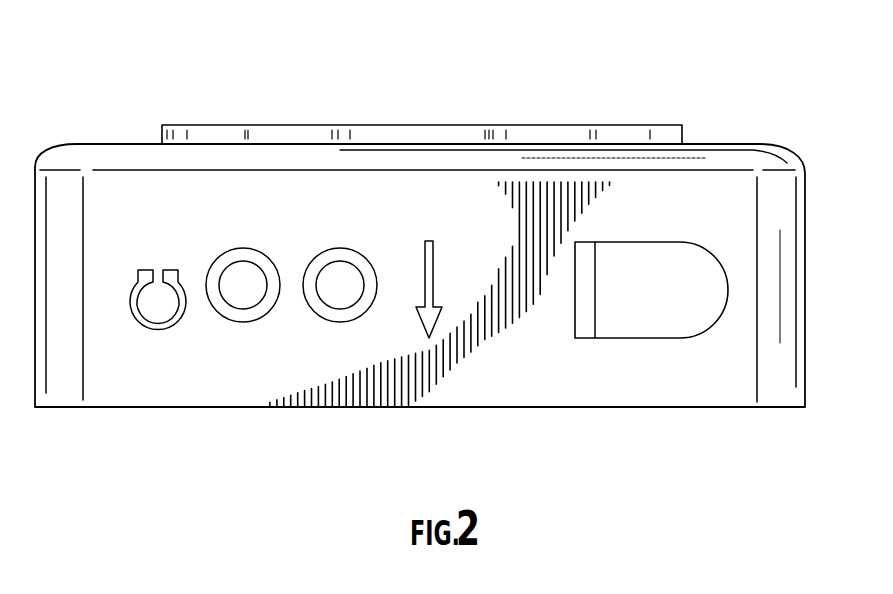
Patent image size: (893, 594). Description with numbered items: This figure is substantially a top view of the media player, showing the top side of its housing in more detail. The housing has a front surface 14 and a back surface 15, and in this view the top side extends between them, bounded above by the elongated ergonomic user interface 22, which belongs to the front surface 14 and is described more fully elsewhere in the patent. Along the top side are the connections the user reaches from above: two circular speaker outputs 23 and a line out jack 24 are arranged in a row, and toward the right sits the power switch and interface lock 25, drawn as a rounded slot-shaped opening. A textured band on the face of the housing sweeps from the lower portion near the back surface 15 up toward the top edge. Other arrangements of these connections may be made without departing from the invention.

The front surface 14 is at (120, 142).
The back surface 15 is at (432, 408).
The ergonomic user interface 22 is at (505, 110).
The speaker outputs 23 is at (237, 232).
The line out jack 24 is at (340, 228).
The power switch and interface lock 25 is at (643, 205).